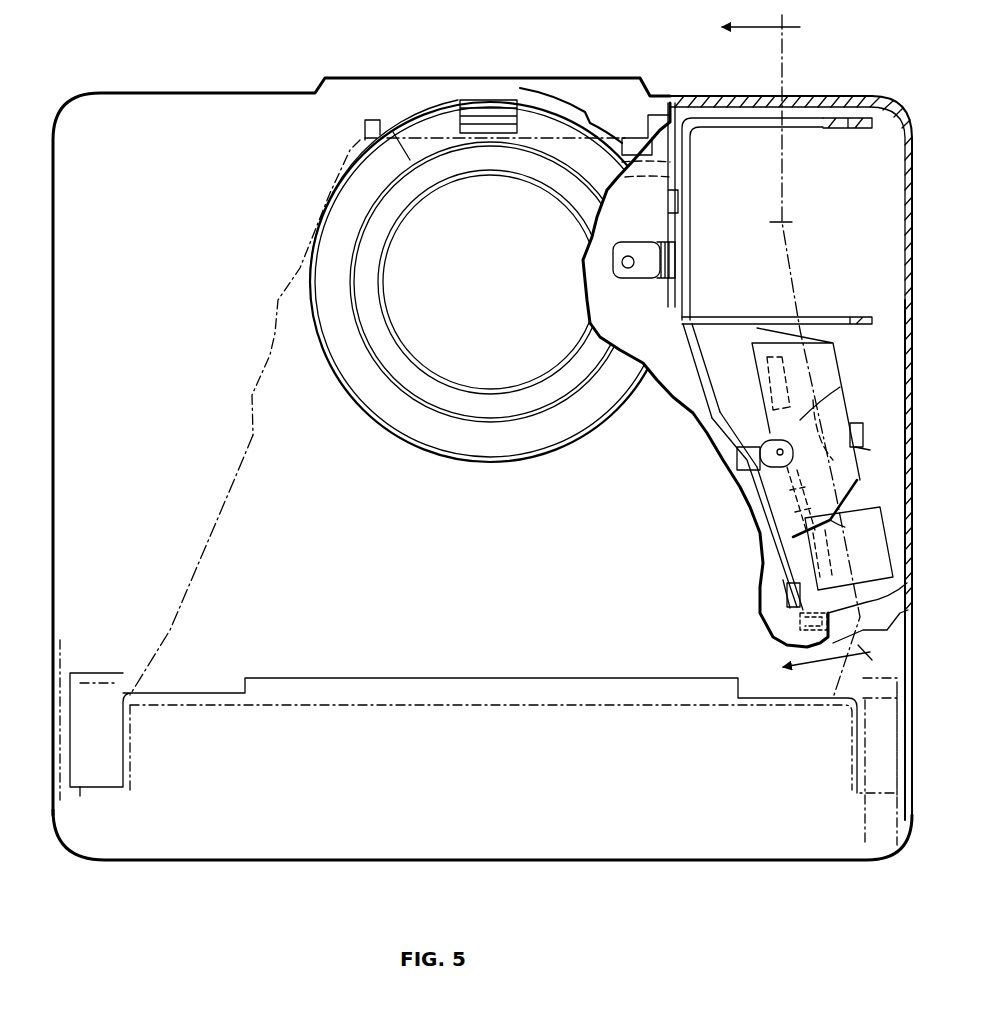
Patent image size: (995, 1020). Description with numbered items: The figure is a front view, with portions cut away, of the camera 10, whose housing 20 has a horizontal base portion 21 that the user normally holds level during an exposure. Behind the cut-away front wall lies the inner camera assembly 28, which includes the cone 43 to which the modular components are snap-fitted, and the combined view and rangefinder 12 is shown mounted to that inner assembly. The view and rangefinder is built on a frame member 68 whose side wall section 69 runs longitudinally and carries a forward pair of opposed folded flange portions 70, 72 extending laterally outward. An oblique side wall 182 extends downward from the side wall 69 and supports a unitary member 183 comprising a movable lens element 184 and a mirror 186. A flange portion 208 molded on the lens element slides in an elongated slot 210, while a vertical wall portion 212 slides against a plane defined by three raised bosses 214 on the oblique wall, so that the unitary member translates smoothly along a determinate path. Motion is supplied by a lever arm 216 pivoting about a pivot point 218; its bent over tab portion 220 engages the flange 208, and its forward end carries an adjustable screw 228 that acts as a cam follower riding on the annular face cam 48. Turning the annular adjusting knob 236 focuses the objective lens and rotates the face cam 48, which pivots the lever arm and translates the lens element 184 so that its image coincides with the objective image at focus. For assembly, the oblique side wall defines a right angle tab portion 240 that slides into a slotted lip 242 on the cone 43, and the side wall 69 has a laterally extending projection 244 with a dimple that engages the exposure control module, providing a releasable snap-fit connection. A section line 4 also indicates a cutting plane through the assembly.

The section line 4- 4 is at (803, 356).
The camera 10 is at (590, 64).
The combined view and rangefinder 12 is at (845, 360).
The housing 20 is at (55, 205).
The horizontal base portion 21 is at (225, 862).
The inner camera assembly 28 is at (240, 392).
The cone 43 is at (232, 478).
The annular face cam 48 is at (597, 383).
The frame member 68 is at (748, 106).
The side wall section 69 is at (693, 204).
The folded flange portion 70 is at (823, 117).
The folded flange portion 72 is at (835, 316).
The oblique side wall 182 is at (690, 402).
The unitary member 183 is at (870, 437).
The movable lens element 184 is at (838, 390).
The mirror 186 is at (893, 520).
The flange portion 208 is at (740, 452).
The elongated slot 210 is at (752, 522).
The vertical wall portion 212 is at (859, 528).
The raised bosses 214 is at (790, 400).
The lever arm 216 is at (706, 326).
The pivot point 218 is at (790, 598).
The bent over tab portion 220 is at (760, 470).
The adjustable screw 228 is at (625, 262).
The annular adjusting knob 236 is at (418, 468).
The right angle tab portion 240 is at (800, 622).
The slotted lip 242 is at (845, 606).
The laterally extending projection 244 is at (682, 120).